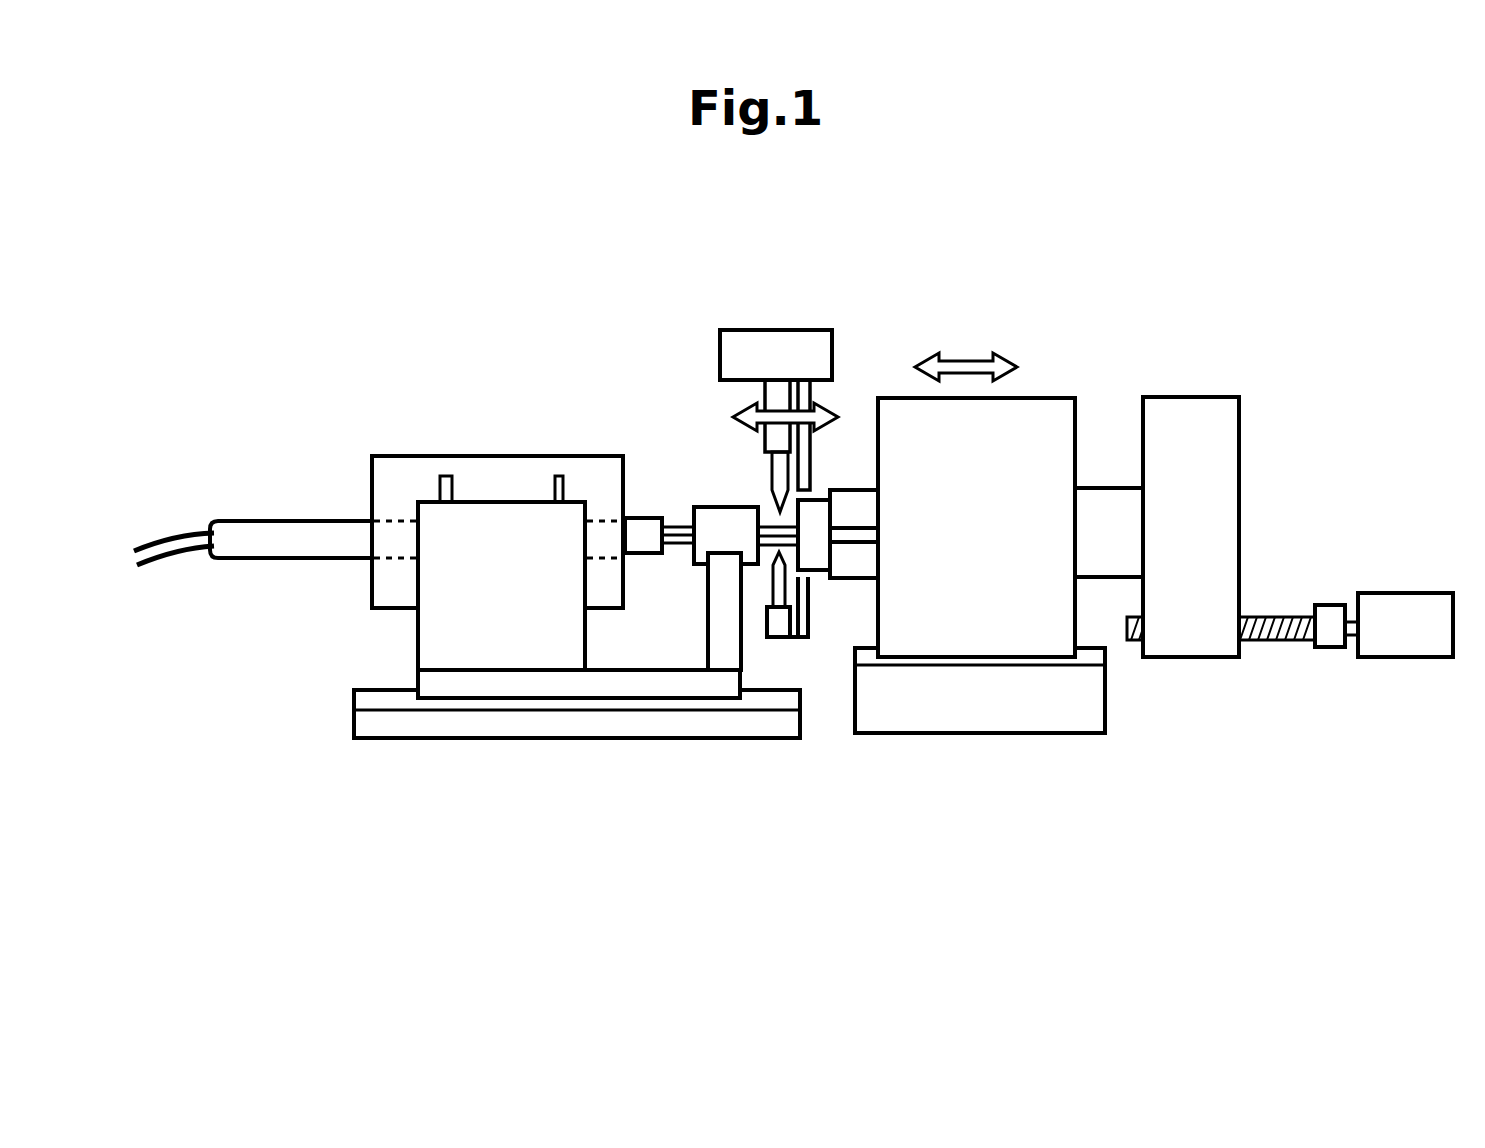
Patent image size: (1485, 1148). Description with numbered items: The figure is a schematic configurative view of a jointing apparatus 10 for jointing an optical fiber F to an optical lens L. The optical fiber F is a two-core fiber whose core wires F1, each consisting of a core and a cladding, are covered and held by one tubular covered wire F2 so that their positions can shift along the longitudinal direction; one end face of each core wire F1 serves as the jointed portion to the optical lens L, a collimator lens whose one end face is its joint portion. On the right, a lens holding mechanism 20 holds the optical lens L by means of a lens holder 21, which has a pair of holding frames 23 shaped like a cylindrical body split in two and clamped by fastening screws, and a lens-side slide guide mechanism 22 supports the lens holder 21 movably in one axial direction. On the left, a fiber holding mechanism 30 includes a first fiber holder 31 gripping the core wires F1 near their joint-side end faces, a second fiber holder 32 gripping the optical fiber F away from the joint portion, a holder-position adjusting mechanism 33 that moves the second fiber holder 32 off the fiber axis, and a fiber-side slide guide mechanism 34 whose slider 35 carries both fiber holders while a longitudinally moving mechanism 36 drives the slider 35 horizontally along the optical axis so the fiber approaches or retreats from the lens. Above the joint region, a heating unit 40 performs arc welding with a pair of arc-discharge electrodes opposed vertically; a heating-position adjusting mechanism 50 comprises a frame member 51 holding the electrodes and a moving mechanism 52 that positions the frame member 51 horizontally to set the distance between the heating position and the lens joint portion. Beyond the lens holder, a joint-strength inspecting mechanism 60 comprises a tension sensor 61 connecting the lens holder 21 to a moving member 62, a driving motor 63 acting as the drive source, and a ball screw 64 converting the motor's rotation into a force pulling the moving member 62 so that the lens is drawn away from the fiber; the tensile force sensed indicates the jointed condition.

The jointing apparatus 10 is at (1207, 268).
The lens holding mechanism 20 is at (940, 807).
The lens holder 21 is at (937, 633).
The lens-side slide guide mechanism 22 is at (1023, 734).
The holding frames 23 is at (870, 490).
The fiber holding mechanism 30 is at (418, 852).
The first fiber holder 31 is at (703, 558).
The second fiber holder 32 is at (368, 606).
The holder-position adjusting mechanism 33 is at (462, 657).
The fiber-side slide guide mechanism 34 is at (532, 809).
The slider 35 is at (540, 684).
The longitudinally moving mechanism 36 is at (612, 741).
The heating unit 40 is at (770, 487).
The heating-position adjusting mechanism 50 is at (730, 253).
The frame member 51 is at (768, 402).
The moving mechanism 52 is at (803, 329).
The joint-strength inspecting mechanism 60 is at (1127, 734).
The tension sensor 61 is at (1105, 579).
The moving member 62 is at (1203, 658).
The driving motor 63 is at (1407, 658).
The ball screw 64 is at (1287, 641).
The optical fiber F is at (712, 406).
The core wires F1 is at (677, 524).
The covered wire F2 is at (650, 517).
The optical lens L is at (820, 574).